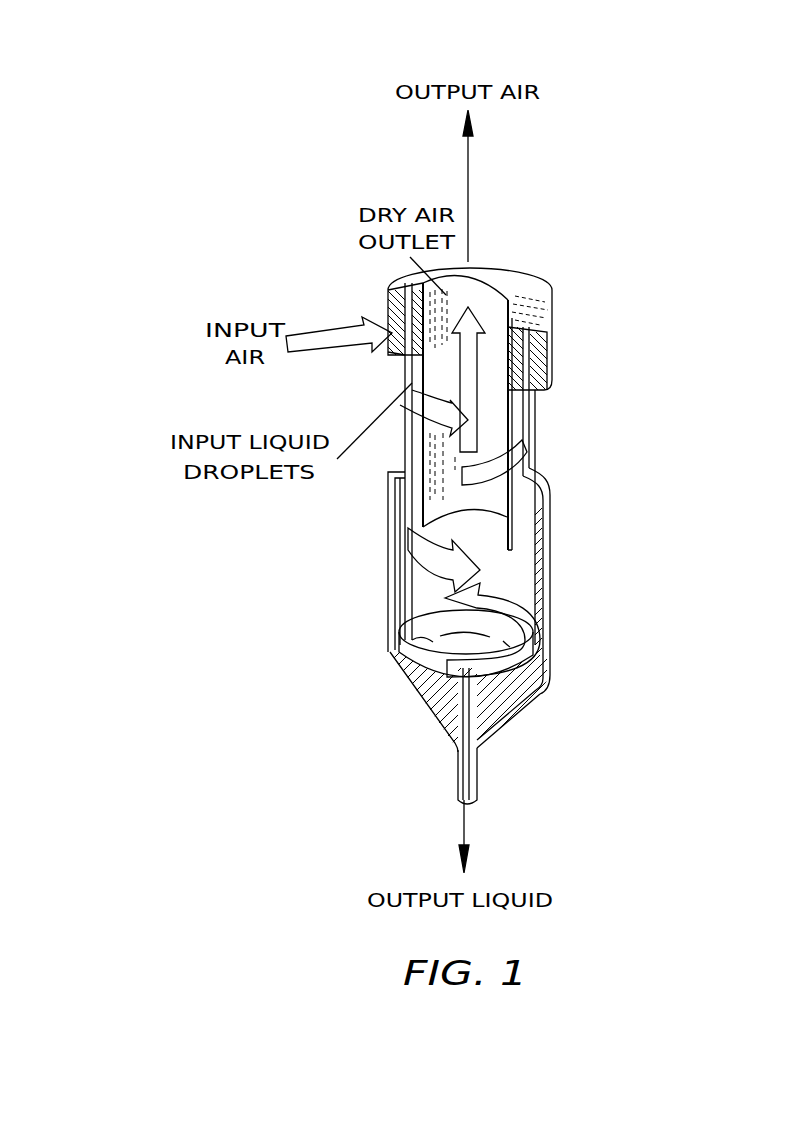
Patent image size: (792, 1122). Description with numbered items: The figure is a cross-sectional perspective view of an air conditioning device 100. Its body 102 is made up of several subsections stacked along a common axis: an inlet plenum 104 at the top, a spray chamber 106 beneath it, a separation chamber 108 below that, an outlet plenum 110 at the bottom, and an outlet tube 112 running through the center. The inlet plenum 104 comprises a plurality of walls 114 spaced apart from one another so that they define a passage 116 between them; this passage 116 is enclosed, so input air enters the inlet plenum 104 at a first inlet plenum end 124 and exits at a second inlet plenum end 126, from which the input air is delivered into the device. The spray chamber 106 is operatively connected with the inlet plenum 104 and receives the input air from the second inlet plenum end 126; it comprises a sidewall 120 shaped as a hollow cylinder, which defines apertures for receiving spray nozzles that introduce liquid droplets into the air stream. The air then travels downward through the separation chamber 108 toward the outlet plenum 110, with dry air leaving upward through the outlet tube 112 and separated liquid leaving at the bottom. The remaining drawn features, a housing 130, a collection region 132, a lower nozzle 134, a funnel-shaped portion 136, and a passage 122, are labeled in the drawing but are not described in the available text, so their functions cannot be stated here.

The air conditioning device 100 is at (622, 196).
The body 102 is at (503, 239).
The inlet plenum 104 is at (557, 297).
The spray chamber 106 is at (557, 388).
The separation chamber 108 is at (557, 500).
The outlet plenum 110 is at (557, 704).
The outlet tube 112 is at (413, 472).
The walls 114 is at (386, 290).
The passage 116 is at (387, 352).
The sidewall 120 is at (405, 440).
The liquid passage 122 is at (513, 424).
The first inlet plenum end 124 is at (387, 312).
The second inlet plenum end 126 is at (553, 333).
The housing 130 is at (390, 588).
The collection chamber 132 is at (406, 652).
The outlet nozzle 134 is at (458, 793).
The funnel 136 is at (444, 698).